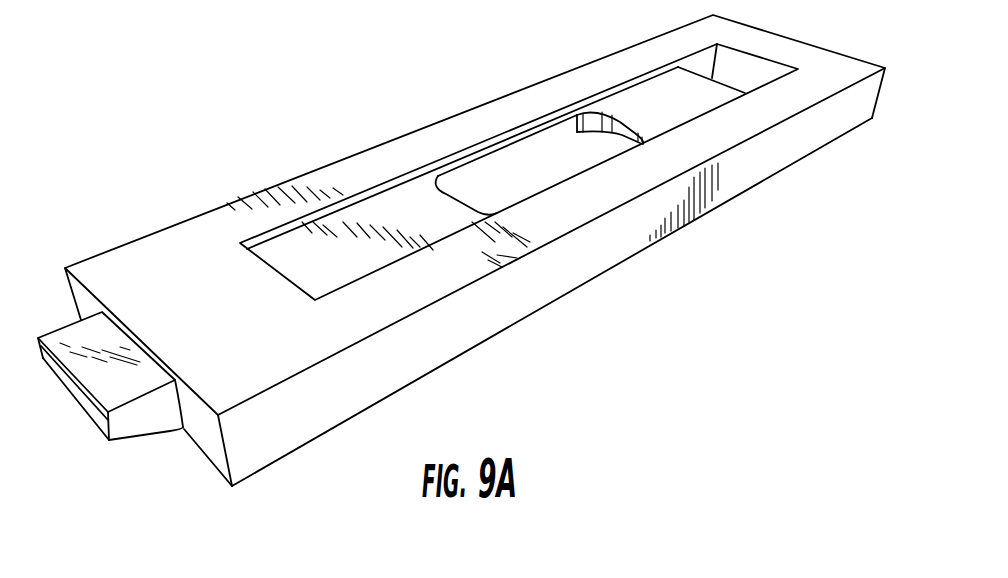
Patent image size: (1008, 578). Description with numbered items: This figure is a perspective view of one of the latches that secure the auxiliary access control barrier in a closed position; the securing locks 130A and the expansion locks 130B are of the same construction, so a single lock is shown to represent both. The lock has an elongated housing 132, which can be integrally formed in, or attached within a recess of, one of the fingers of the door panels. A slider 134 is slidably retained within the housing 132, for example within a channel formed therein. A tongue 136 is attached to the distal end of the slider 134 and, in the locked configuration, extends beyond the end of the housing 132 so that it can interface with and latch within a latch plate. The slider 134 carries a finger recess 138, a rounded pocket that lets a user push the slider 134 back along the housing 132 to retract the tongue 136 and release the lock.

The securing lock 130A is at (461, 244).
The expansion lock 130B is at (461, 244).
The housing 132 is at (593, 278).
The slider 134 is at (642, 105).
The tongue 136 is at (97, 382).
The finger recess 138 is at (545, 170).